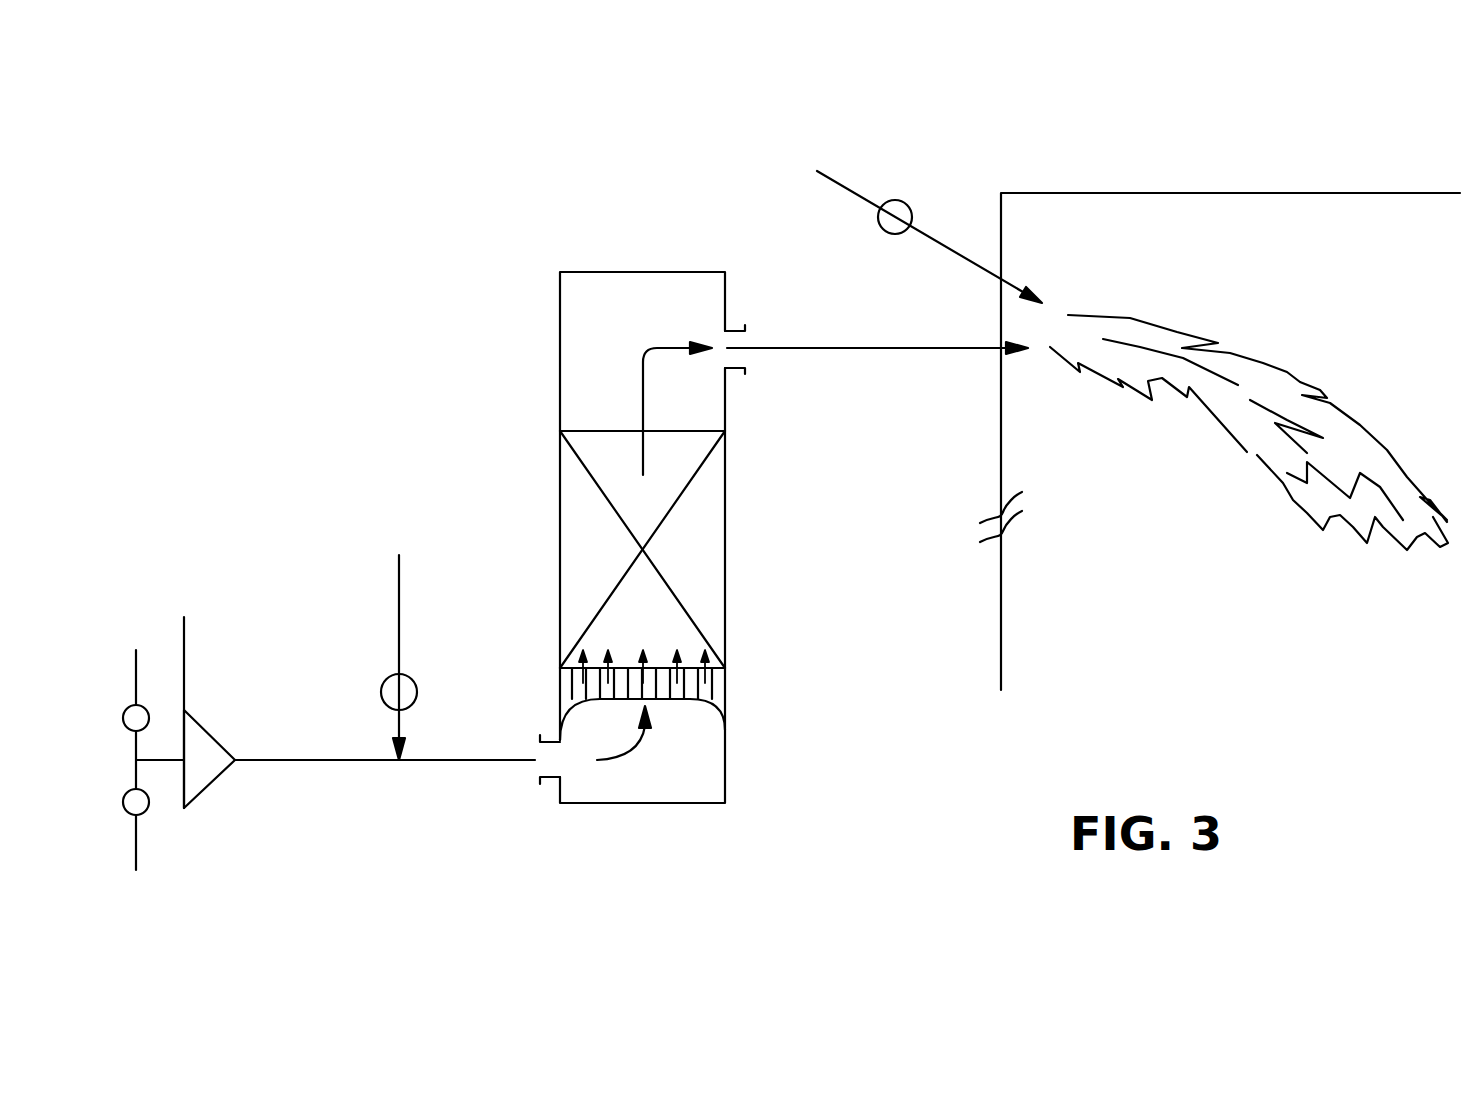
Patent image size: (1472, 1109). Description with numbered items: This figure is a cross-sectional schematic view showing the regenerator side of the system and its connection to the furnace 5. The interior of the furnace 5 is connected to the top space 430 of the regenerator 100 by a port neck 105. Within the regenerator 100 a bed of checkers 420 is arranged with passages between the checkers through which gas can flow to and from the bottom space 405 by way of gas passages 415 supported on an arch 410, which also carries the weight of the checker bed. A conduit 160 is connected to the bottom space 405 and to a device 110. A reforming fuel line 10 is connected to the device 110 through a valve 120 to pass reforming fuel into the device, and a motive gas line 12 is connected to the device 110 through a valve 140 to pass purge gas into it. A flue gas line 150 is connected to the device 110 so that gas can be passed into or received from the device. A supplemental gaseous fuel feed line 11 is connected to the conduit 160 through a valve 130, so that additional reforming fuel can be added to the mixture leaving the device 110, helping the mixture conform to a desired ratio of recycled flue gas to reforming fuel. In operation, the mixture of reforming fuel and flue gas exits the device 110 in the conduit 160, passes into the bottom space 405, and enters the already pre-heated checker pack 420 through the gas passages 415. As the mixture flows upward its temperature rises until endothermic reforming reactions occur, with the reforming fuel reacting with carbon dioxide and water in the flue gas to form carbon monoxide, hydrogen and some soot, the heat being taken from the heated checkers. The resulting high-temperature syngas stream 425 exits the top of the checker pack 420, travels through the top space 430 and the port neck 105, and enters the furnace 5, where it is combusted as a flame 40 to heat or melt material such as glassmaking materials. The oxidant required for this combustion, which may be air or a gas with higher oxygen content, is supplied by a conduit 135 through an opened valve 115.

The furnace 5 is at (1212, 193).
The reforming fuel line 10 is at (133, 858).
The supplemental gaseous fuel feed line 11 is at (400, 620).
The motive gas line 12 is at (133, 662).
The flame 40 is at (1290, 378).
The regenerator 100 is at (633, 272).
The port neck 105 is at (850, 352).
The device 110 is at (226, 720).
The valve 115 is at (888, 200).
The valve 120 is at (111, 773).
The valve 130 is at (418, 692).
The conduit 135 is at (847, 192).
The valve 140 is at (111, 718).
The flue gas line 150 is at (186, 663).
The conduit 160 is at (490, 762).
The bottom space 405 is at (650, 787).
The arch 410 is at (722, 686).
The gas passages 415 is at (672, 695).
The checkers 420 is at (703, 542).
The gaseous stream 425 is at (648, 365).
The top space 430 is at (578, 313).